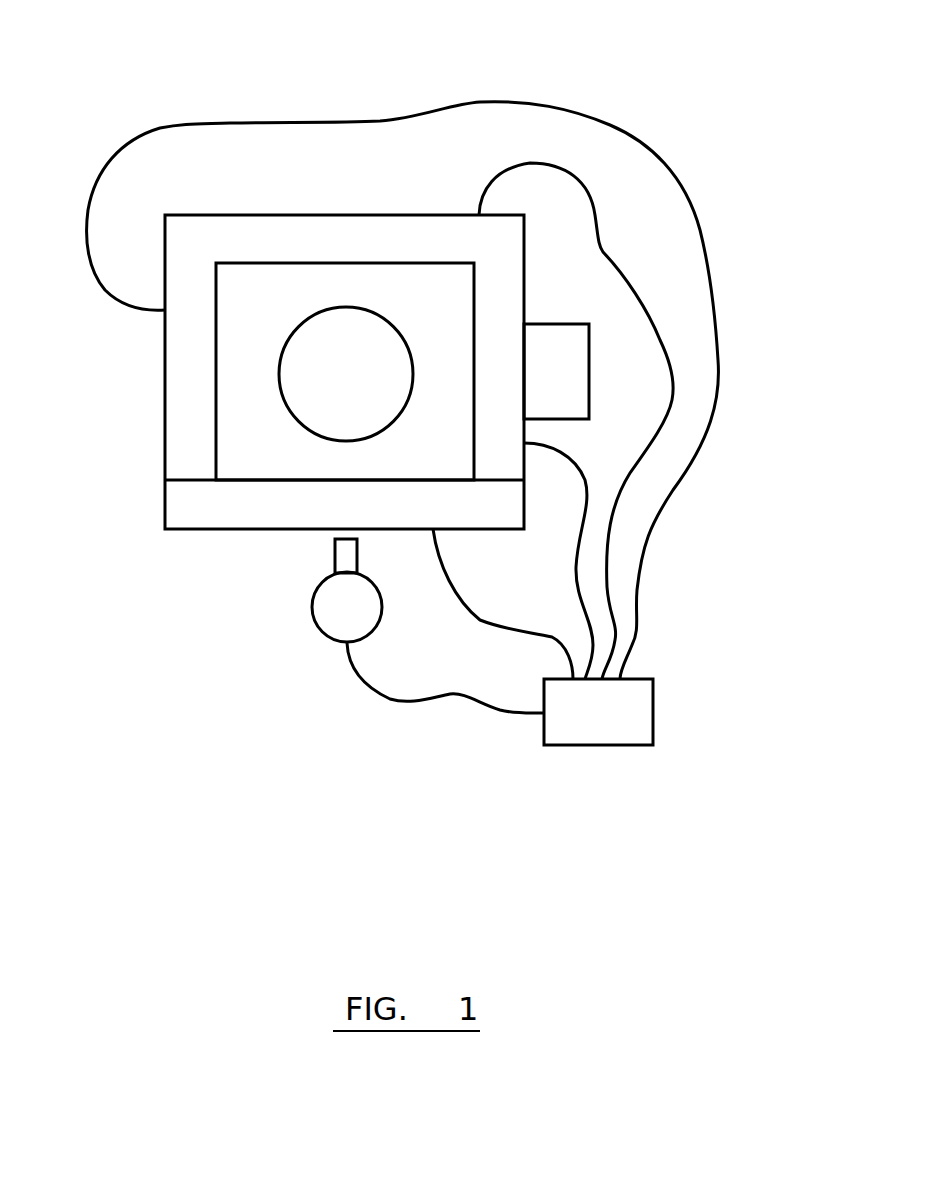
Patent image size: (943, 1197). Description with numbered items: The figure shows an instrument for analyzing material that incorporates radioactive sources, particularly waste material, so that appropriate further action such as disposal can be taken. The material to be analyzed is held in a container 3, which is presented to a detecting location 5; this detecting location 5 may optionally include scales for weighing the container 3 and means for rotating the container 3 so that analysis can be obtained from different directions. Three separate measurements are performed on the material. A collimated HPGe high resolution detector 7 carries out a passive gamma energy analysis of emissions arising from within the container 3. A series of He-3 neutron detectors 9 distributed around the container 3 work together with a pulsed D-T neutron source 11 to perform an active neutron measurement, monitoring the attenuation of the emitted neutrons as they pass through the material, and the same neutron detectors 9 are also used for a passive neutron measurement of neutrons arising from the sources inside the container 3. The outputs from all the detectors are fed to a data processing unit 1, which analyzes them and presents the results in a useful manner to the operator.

The data processing unit 1 is at (620, 712).
The container 3 is at (300, 378).
The detecting location 5 is at (292, 462).
The detector 7 is at (335, 618).
The He-3 neutron detectors 9 is at (308, 236).
The pulsed D-T neutron source 11 is at (565, 378).